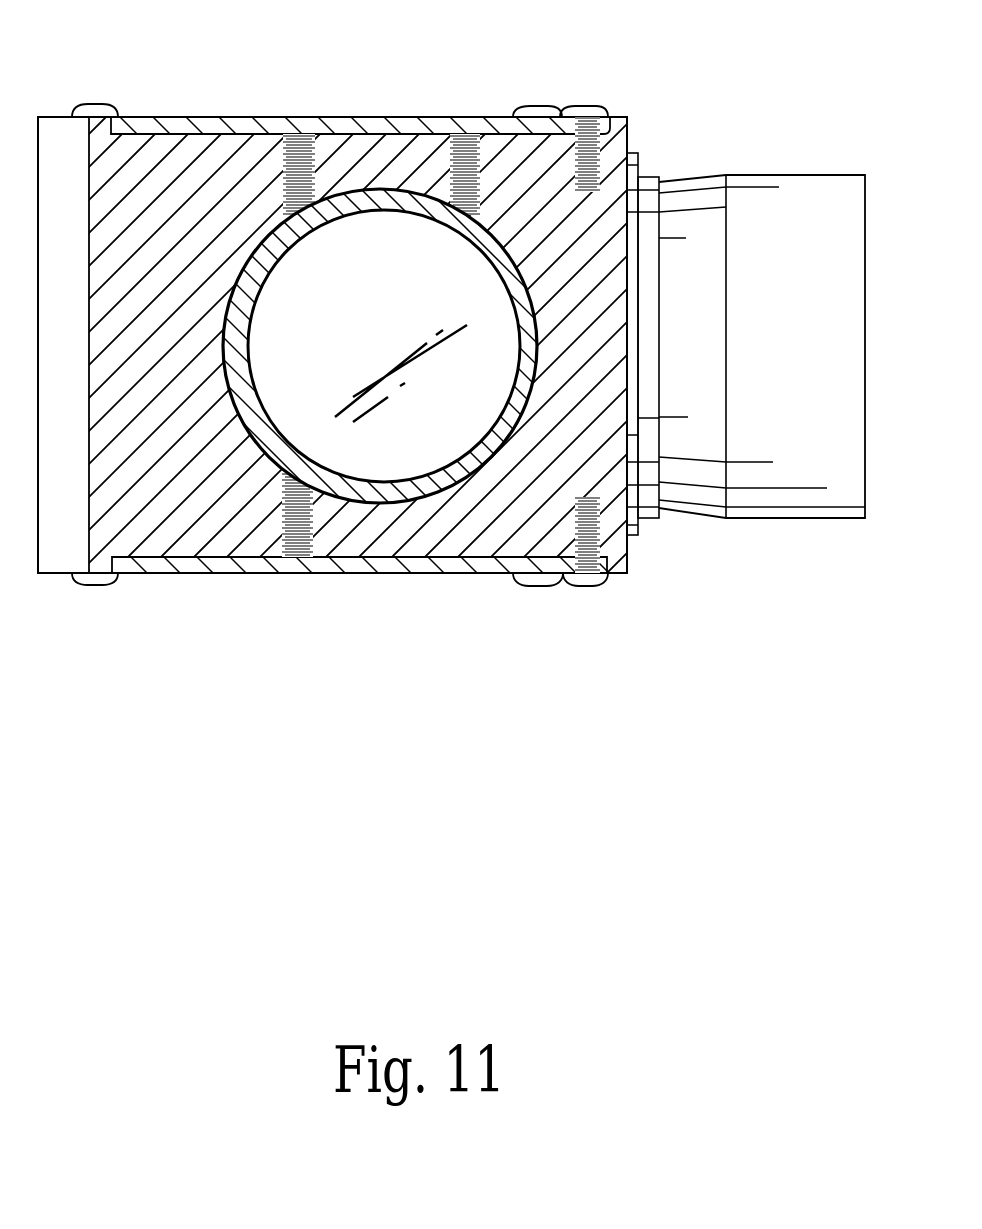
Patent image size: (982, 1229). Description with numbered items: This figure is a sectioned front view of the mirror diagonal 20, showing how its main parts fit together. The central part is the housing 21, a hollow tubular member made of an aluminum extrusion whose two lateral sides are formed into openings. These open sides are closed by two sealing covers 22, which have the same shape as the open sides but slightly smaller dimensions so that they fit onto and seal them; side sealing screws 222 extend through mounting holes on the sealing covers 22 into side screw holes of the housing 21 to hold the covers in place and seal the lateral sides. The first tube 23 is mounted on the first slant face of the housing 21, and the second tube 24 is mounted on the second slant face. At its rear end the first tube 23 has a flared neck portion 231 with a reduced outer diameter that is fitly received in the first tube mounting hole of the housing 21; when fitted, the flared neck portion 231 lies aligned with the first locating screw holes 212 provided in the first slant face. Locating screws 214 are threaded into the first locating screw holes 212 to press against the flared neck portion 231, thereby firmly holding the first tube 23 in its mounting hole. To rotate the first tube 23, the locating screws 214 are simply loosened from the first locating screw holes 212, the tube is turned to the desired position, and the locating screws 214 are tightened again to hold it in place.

The mirror diagonal 20 is at (491, 363).
The housing 21 is at (437, 565).
The first locating screw holes 212 is at (292, 547).
The locating screws 214 is at (465, 140).
The sealing covers 22 is at (145, 562).
The side sealing screws 222 is at (587, 140).
The first tube 23 is at (297, 235).
The flared neck portion 231 is at (377, 190).
The second tube 24 is at (797, 188).